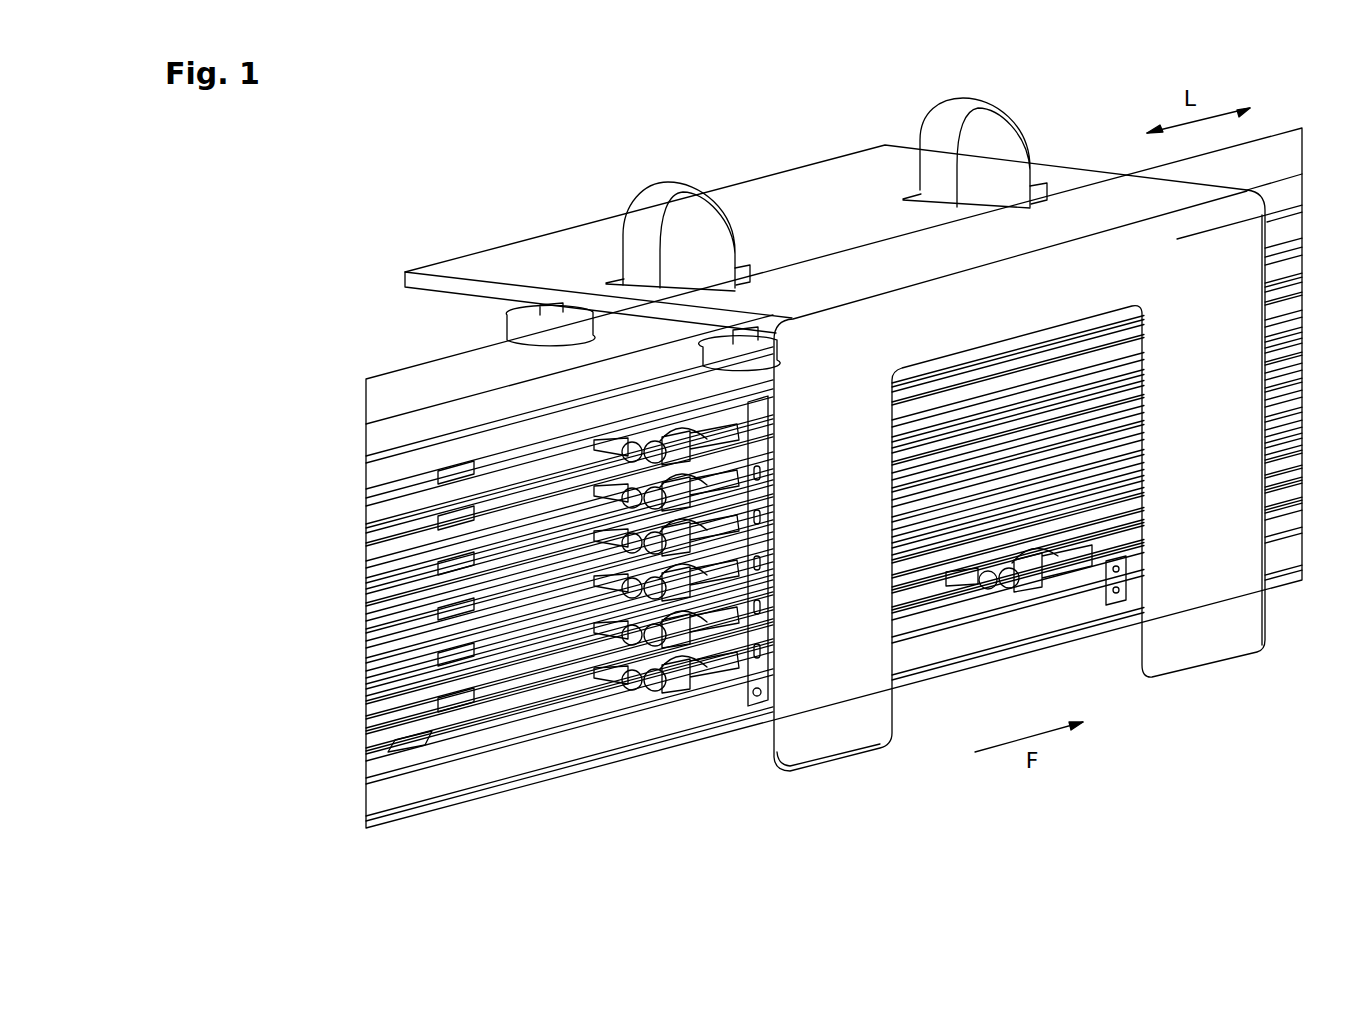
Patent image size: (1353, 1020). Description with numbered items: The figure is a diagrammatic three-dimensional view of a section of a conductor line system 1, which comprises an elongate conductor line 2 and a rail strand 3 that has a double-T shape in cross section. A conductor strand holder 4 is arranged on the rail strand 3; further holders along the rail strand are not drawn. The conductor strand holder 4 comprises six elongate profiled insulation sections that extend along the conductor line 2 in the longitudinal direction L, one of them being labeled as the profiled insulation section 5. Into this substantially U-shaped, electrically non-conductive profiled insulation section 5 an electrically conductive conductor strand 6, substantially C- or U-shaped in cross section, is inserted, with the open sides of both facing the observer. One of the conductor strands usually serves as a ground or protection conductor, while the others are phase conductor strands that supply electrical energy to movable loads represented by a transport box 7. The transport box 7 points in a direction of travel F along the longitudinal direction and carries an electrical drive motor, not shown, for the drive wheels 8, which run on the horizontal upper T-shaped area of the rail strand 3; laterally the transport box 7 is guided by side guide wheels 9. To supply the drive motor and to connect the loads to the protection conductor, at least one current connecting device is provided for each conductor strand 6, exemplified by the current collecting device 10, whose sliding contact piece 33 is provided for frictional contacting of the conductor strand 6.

The conductor line system 1 is at (318, 232).
The conductor line 2 is at (345, 540).
The rail strand 3 is at (385, 383).
The conductor strand holder 4 is at (466, 732).
The profiled insulation section 5 is at (512, 717).
The conductor strand 6 is at (565, 688).
The transport box 7 is at (837, 748).
The drive wheels 8 is at (927, 160).
The side guide wheels 9 is at (710, 347).
The current collecting device 10 is at (675, 704).
The sliding contact piece 33 is at (587, 684).